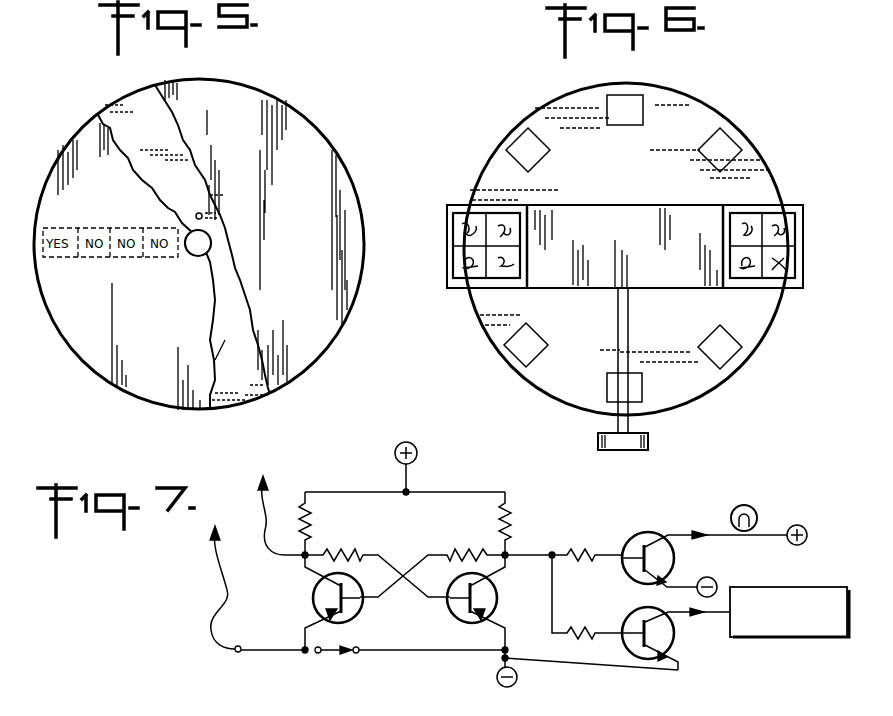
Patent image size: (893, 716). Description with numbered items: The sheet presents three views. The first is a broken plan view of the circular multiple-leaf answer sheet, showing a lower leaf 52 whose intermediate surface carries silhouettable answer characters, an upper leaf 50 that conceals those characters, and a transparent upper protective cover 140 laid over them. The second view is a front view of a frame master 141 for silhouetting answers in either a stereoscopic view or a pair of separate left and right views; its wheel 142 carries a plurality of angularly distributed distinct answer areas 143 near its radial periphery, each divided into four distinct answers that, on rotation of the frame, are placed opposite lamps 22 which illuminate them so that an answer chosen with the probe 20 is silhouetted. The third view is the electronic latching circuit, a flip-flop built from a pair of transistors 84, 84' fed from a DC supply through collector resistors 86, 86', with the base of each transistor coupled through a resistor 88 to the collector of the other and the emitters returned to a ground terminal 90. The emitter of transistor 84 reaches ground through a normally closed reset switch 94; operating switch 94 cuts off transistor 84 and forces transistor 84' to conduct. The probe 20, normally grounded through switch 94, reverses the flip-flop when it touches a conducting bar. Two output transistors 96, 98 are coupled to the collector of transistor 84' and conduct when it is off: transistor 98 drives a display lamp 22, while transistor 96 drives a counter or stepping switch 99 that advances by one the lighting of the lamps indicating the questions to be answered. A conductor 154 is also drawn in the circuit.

In FIG. 5, the upper leaf 50 is at (123, 102).
In FIG. 5, the lower leaf 52 is at (76, 134).
In FIG. 5, the transparent upper protective cover 140 is at (227, 92).
In FIG. 6, the frame master 141 is at (803, 214).
In FIG. 6, the wheel 142 is at (705, 115).
In FIG. 6, the answer areas 143 is at (728, 145).
In FIG. 6, the lamp 22 is at (450, 222).
In FIG. 7, the lamp 22 is at (745, 505).
In FIG. 7, the probe 20 is at (210, 553).
In FIG. 7, the transistor 84 is at (316, 602).
In FIG. 7, the transistor 84' is at (452, 602).
In FIG. 7, the collector resistor 86 is at (328, 523).
In FIG. 7, the collector resistor 86' is at (477, 523).
In FIG. 7, the resistor 88 is at (347, 548).
In FIG. 7, the ground terminal 90 is at (388, 654).
In FIG. 7, the reset switch 94 is at (334, 654).
In FIG. 7, the output transistor 96 is at (645, 613).
In FIG. 7, the output transistor 98 is at (650, 531).
In FIG. 7, the counter or stepping switch 99 is at (786, 587).
In FIG. 7, the conductor 154 is at (591, 687).